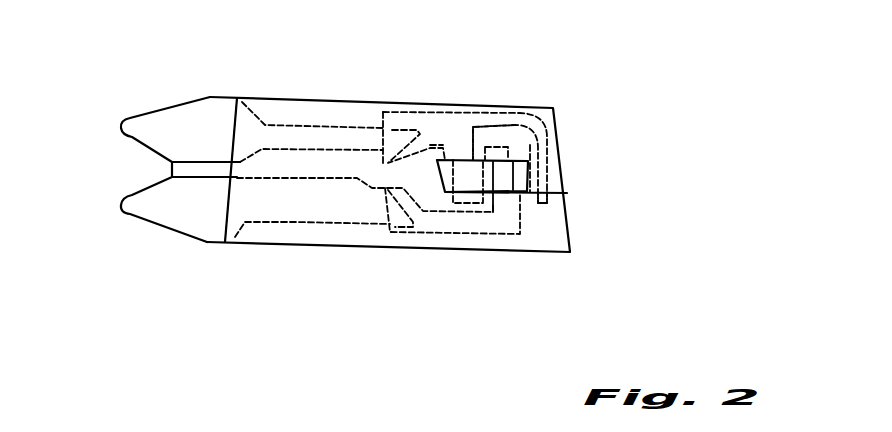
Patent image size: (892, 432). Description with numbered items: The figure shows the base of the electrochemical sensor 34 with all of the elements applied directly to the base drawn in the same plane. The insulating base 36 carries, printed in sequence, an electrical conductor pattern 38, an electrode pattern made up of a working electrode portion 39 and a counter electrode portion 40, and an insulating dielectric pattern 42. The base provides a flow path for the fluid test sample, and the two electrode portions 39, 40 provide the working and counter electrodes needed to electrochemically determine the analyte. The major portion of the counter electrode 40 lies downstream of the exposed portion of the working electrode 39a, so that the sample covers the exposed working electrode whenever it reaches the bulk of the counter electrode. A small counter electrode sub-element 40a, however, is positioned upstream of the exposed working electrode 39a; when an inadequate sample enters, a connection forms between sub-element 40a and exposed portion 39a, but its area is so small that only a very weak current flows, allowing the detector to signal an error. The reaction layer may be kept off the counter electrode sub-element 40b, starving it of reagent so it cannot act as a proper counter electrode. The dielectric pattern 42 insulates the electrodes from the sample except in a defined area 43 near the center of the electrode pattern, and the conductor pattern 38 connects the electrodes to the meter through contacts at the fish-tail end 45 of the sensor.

The sensor 34 is at (685, 66).
The insulating base 36 is at (572, 252).
The electrical conductor pattern 38 is at (283, 123).
The working electrode portion of the electrode pattern 39 is at (447, 236).
The exposed portion of the working electrode 39a is at (503, 177).
The counter electrode portion of the electrode pattern 40 is at (512, 110).
The counter electrode sub-element 40a is at (557, 112).
The counter electrode sub-element 40b is at (548, 192).
The insulating dielectric pattern 42 is at (233, 133).
The defined area near the center of the electrode pattern 43 is at (513, 237).
The fish-tail end 45 is at (152, 170).